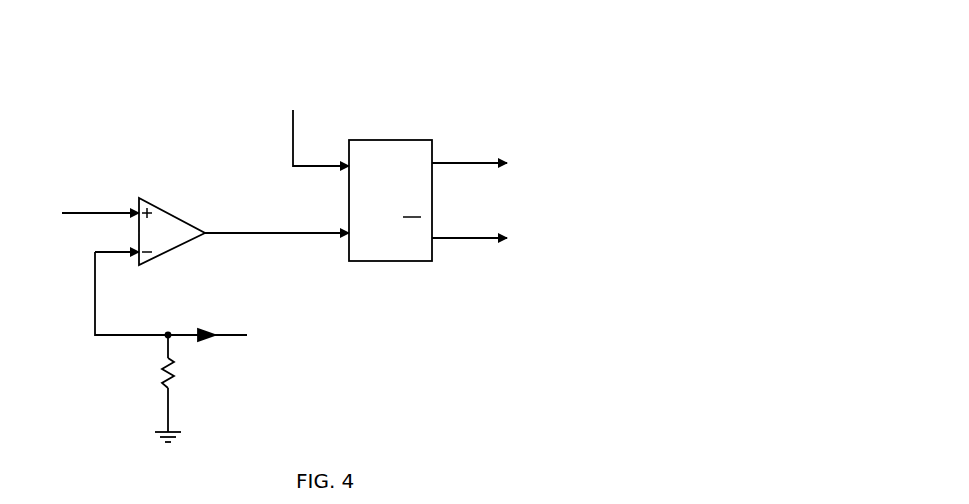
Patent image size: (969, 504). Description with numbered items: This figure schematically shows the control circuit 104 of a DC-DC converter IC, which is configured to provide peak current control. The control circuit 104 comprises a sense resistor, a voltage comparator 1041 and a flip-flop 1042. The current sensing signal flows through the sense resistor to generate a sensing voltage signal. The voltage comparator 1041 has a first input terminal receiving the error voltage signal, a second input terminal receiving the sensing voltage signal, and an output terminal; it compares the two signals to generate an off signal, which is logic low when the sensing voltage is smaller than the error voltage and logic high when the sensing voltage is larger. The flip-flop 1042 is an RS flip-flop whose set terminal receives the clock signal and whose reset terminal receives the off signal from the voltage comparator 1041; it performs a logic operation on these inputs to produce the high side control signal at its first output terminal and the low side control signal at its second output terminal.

The control circuit 104 is at (547, 57).
The voltage comparator 1041 is at (182, 192).
The flip-flop 1042 is at (415, 123).